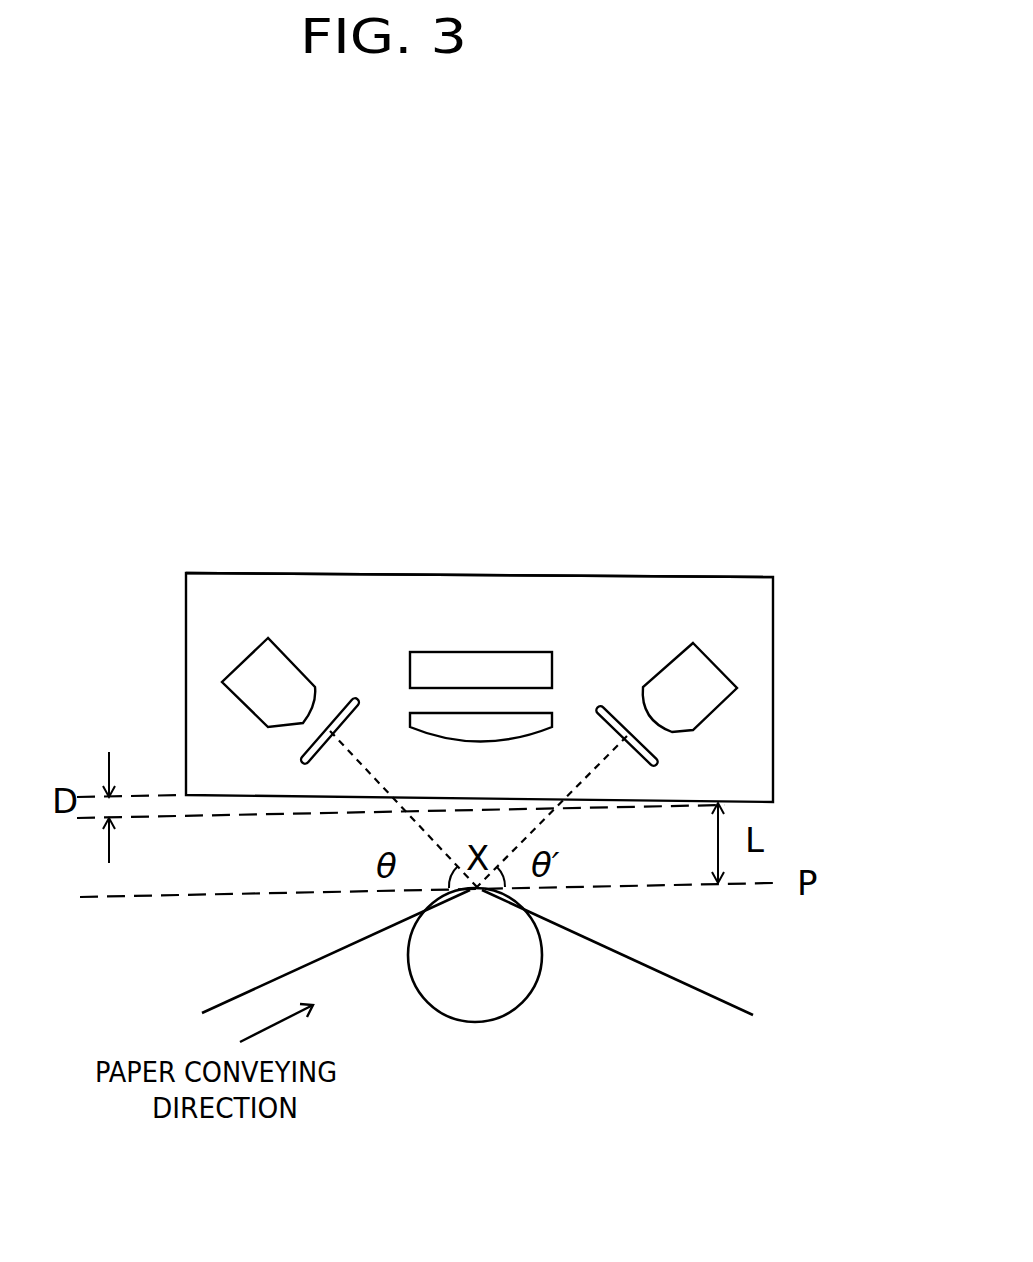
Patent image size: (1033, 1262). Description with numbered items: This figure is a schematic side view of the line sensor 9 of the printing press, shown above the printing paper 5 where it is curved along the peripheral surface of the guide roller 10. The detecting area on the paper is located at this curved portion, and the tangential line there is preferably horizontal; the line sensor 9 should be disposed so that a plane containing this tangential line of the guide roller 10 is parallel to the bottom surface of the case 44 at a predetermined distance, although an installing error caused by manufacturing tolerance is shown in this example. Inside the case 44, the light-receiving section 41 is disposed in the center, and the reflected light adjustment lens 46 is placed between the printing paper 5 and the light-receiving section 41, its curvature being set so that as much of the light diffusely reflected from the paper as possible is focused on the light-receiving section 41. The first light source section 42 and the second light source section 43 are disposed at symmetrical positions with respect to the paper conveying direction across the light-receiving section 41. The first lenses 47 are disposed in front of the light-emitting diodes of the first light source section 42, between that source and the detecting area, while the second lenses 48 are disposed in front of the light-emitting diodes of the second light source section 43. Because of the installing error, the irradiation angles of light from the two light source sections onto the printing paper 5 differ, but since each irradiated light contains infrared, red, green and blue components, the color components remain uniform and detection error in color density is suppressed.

The line sensor 9 is at (357, 498).
The case 44 is at (737, 577).
The light-receiving section 41 is at (513, 652).
The reflected light adjustment lens 46 is at (408, 714).
The first light source section 42 is at (250, 660).
The second light source section 43 is at (712, 676).
The first lenses 47 is at (298, 755).
The second lenses 48 is at (658, 754).
The printing paper 5 is at (658, 972).
The guide roller 10 is at (467, 1018).